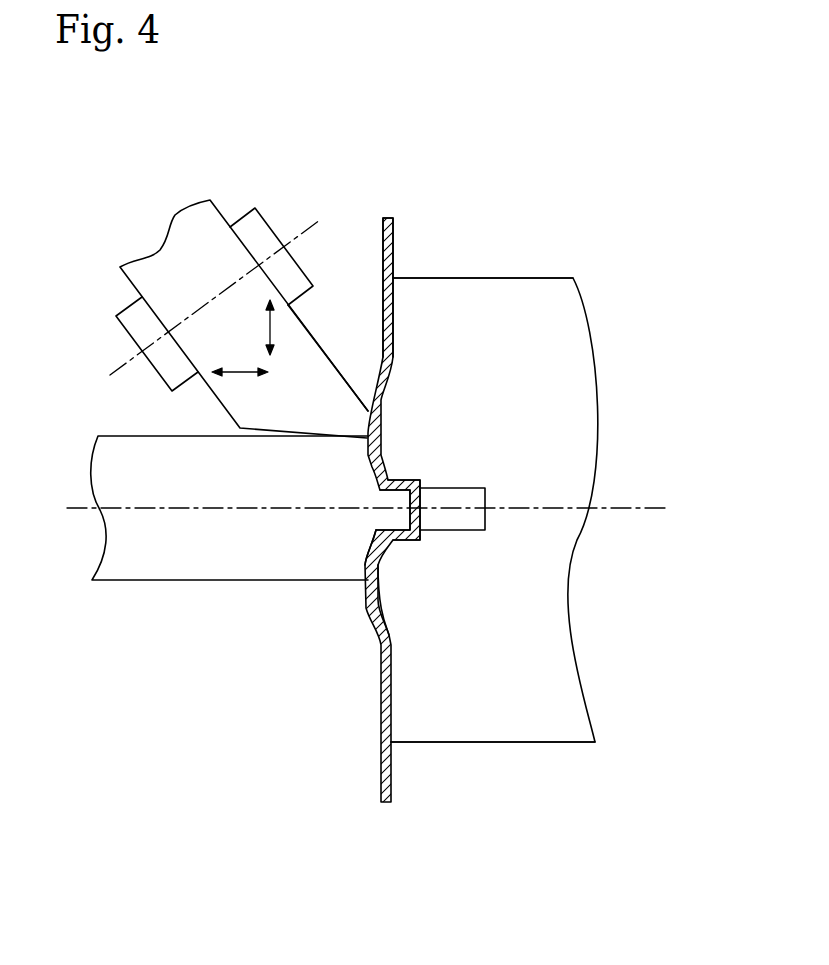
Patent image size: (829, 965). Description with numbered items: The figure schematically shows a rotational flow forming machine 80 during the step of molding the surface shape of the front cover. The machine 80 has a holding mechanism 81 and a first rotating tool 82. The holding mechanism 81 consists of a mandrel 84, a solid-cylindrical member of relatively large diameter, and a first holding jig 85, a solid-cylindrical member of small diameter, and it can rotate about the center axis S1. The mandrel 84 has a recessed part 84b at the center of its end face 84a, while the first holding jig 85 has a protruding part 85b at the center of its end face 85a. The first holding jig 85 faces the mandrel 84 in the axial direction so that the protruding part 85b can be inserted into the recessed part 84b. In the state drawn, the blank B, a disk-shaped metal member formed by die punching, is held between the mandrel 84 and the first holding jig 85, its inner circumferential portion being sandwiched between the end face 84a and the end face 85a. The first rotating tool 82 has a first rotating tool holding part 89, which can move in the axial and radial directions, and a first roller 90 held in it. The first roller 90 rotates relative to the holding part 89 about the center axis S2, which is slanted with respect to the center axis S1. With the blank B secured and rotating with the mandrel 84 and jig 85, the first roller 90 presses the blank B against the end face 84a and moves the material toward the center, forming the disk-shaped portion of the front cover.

The rotational flow forming machine 80 is at (528, 188).
The holding mechanism 81 is at (468, 210).
The first rotating tool 82 is at (226, 175).
The mandrel 84 is at (565, 385).
The end face 84a is at (391, 698).
The recessed part 84b is at (405, 508).
The first holding jig 85 is at (188, 557).
The end face 85a is at (390, 568).
The protruding part 85b is at (393, 520).
The first rotating tool holding part 89 is at (259, 229).
The first roller 90 is at (318, 383).
The blank B is at (394, 252).
The center axis S1 is at (358, 514).
The center axis S2 is at (215, 294).